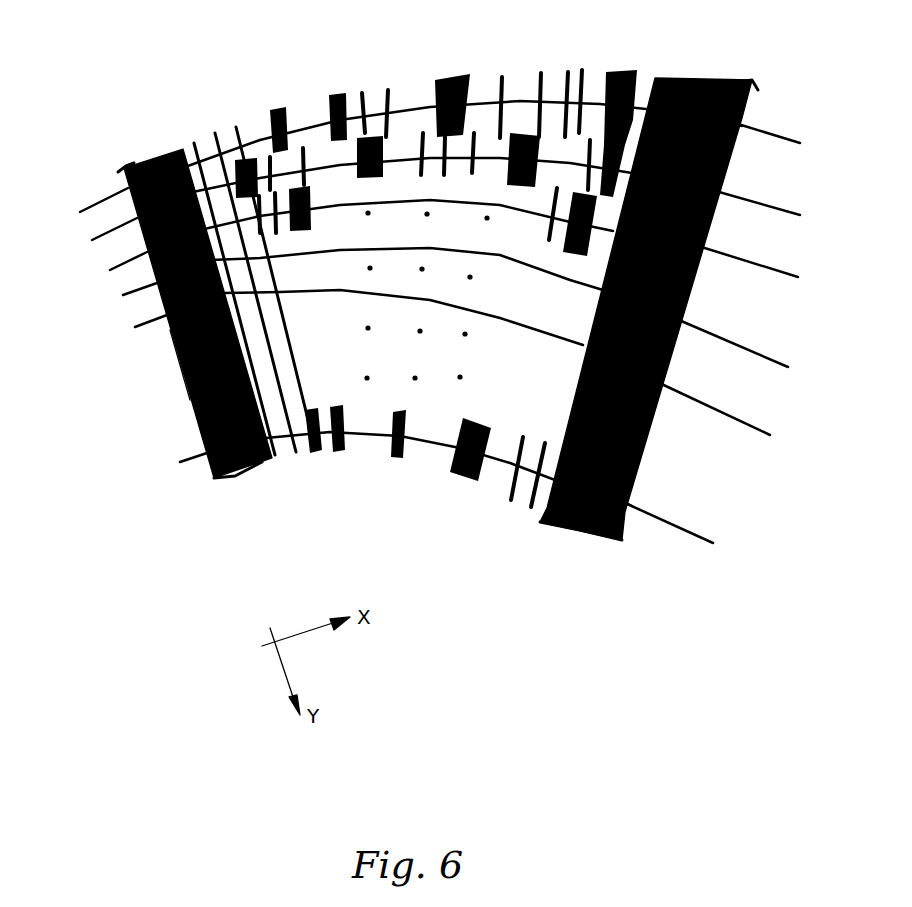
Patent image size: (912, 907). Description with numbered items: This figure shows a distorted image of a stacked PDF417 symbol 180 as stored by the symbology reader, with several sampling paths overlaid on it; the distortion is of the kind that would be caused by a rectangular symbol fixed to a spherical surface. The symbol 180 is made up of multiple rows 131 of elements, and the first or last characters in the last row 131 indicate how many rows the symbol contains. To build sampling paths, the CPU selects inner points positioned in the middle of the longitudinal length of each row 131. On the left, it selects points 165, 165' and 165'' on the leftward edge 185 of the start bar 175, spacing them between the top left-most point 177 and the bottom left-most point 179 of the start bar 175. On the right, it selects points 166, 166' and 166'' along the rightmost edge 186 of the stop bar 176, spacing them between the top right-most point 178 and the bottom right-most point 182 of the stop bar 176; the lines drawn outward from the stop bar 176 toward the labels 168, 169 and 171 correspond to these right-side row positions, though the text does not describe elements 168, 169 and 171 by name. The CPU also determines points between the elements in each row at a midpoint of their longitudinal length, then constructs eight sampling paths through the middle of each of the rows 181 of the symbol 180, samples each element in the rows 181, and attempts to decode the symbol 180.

The row 131 is at (698, 283).
The inner point 165 is at (77, 196).
The inner point 165' is at (94, 247).
The inner point 165'' is at (161, 447).
The inner point 166 is at (782, 103).
The inner point 166' is at (750, 174).
The inner point 166'' is at (676, 488).
The lead line 168 is at (798, 137).
The lead line 169 is at (777, 203).
The lead line 171 is at (707, 537).
The start bar 175 is at (151, 156).
The stop bar 176 is at (687, 77).
The top left-most point 177 is at (122, 167).
The top right-most point 178 is at (753, 82).
The bottom left-most point 179 is at (210, 476).
The PDF417 symbol 180 is at (306, 492).
The row 181 is at (350, 166).
The bottom right-most point 182 is at (620, 543).
The leftward edge 185 is at (180, 360).
The rightmost edge 186 is at (677, 312).